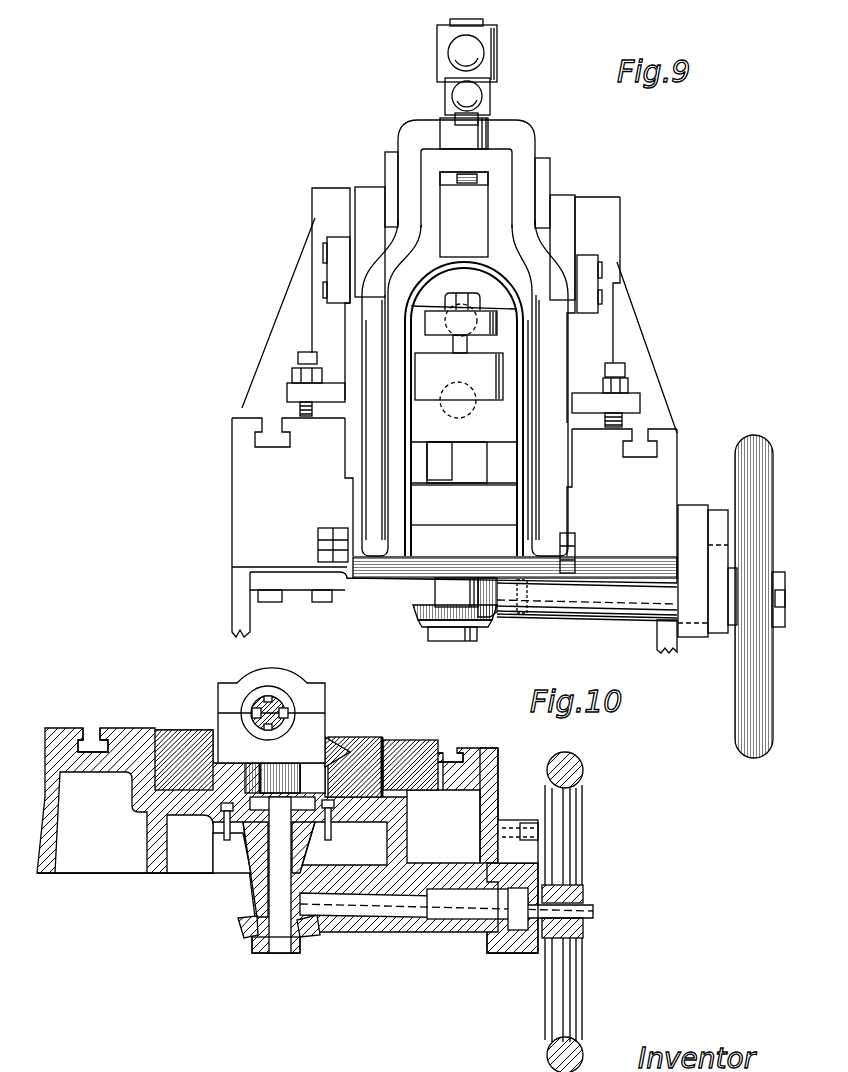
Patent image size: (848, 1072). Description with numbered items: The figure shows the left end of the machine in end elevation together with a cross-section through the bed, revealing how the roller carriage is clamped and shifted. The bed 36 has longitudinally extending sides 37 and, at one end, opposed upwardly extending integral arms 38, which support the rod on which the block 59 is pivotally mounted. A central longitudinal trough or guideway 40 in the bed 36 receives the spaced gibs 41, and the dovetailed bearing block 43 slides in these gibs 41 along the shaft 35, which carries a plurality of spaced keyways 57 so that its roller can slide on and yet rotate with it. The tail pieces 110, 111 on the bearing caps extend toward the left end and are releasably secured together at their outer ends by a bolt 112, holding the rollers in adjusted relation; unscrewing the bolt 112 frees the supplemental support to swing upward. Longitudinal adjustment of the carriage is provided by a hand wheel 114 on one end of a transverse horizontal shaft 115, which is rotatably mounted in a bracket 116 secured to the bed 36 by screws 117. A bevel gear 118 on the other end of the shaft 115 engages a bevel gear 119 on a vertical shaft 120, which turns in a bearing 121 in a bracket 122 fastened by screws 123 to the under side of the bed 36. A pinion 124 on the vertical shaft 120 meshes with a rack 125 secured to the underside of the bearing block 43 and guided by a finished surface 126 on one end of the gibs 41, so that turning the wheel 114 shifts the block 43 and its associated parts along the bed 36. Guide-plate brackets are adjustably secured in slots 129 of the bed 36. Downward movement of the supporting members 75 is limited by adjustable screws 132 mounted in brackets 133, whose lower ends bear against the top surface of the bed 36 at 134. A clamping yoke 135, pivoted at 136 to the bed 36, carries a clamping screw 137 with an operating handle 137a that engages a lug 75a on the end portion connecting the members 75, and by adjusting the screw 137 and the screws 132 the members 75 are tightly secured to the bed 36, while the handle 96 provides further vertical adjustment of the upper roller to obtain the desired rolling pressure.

In FIG. 10, the shaft 35 is at (262, 703).
In FIG. 9, the bed 36 is at (672, 468).
In FIG. 10, the bed 36 is at (497, 806).
In FIG. 10, the sides 37 is at (500, 788).
In FIG. 9, the arms 38 is at (622, 242).
In FIG. 10, the trough or guideway 40 is at (147, 817).
In FIG. 10, the gibs 41 is at (163, 730).
In FIG. 10, the bearing block 43 is at (310, 720).
In FIG. 9, the keyways 57 is at (272, 700).
In FIG. 10, the keyways 57 is at (272, 700).
In FIG. 9, the block 59 is at (567, 220).
In FIG. 9, the supporting members 75 is at (537, 212).
In FIG. 9, the lug 75a is at (480, 202).
In FIG. 9, the handle 96 is at (485, 53).
In FIG. 10, the handle 96 is at (305, 692).
In FIG. 9, the tail piece 110 is at (455, 395).
In FIG. 9, the tail piece 111 is at (500, 333).
In FIG. 9, the bolt 112 is at (455, 297).
In FIG. 9, the hand wheel 114 is at (738, 673).
In FIG. 10, the hand wheel 114 is at (585, 800).
In FIG. 9, the transverse horizontal shaft 115 is at (587, 600).
In FIG. 10, the transverse horizontal shaft 115 is at (362, 920).
In FIG. 9, the bracket 116 is at (681, 650).
In FIG. 10, the bracket 116 is at (503, 953).
In FIG. 10, the screws 117 is at (540, 832).
In FIG. 9, the bevel gear 118 is at (495, 618).
In FIG. 10, the bevel gear 118 is at (313, 930).
In FIG. 9, the bevel gear 119 is at (428, 628).
In FIG. 10, the bevel gear 119 is at (253, 942).
In FIG. 10, the vertical shaft 120 is at (272, 953).
In FIG. 10, the bearing 121 is at (250, 917).
In FIG. 9, the bracket 122 is at (437, 593).
In FIG. 10, the bracket 122 is at (253, 890).
In FIG. 10, the screws 123 is at (243, 823).
In FIG. 10, the pinion 124 is at (330, 737).
In FIG. 9, the rack 125 is at (446, 472).
In FIG. 10, the rack 125 is at (248, 775).
In FIG. 10, the finished surface 126 is at (212, 782).
In FIG. 9, the slots 129 is at (262, 422).
In FIG. 10, the slots 129 is at (93, 738).
In FIG. 9, the adjustable screws 132 is at (297, 358).
In FIG. 9, the brackets 133 is at (328, 323).
In FIG. 9, the bearing point on bed 134 is at (310, 420).
In FIG. 9, the clamping yoke 135 is at (364, 493).
In FIG. 9, the pivot 136 is at (577, 548).
In FIG. 9, the clamping screw 137 is at (485, 110).
In FIG. 9, the operating handle 137a is at (487, 88).